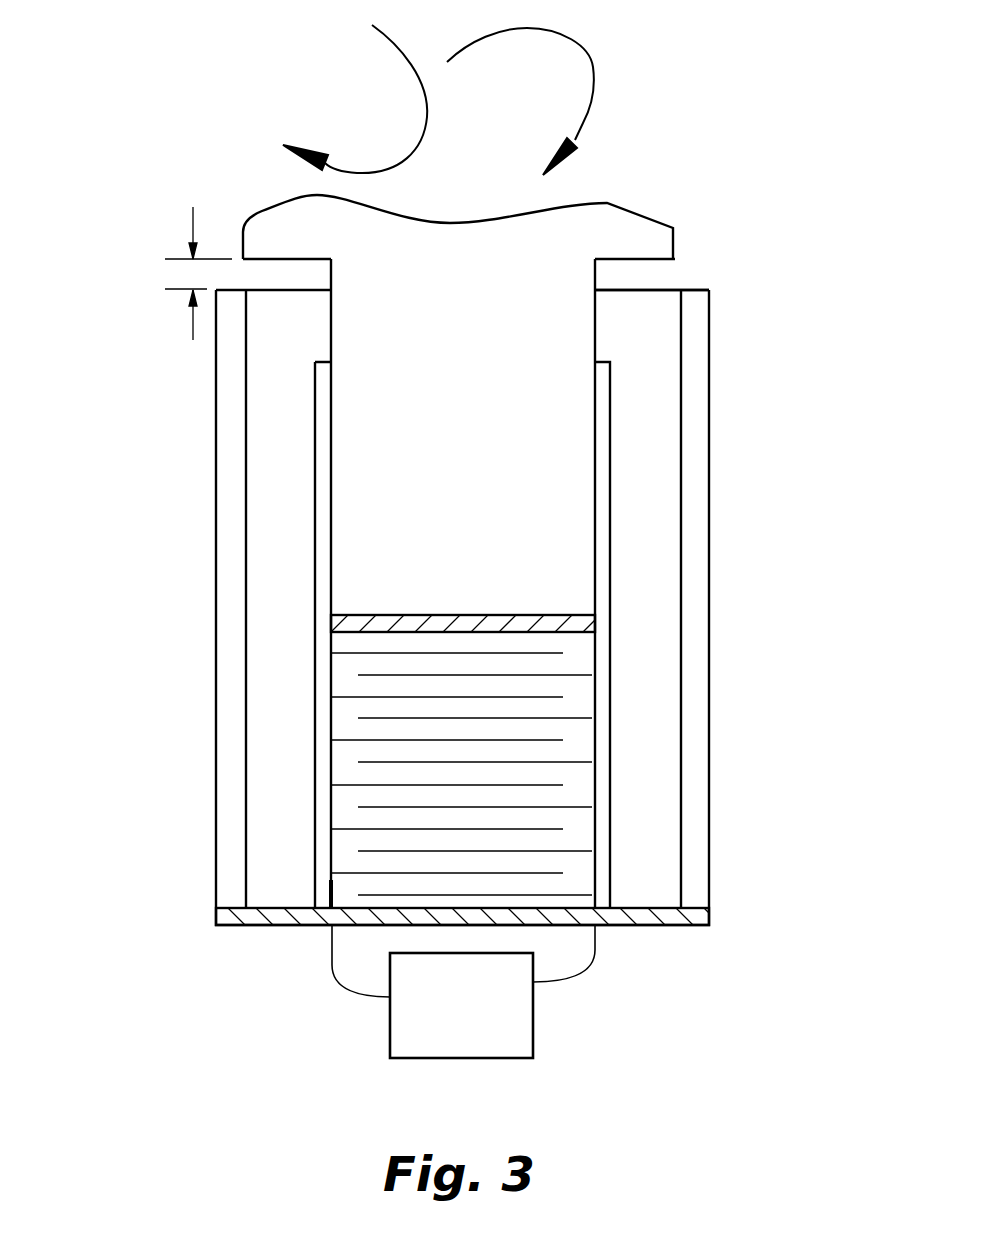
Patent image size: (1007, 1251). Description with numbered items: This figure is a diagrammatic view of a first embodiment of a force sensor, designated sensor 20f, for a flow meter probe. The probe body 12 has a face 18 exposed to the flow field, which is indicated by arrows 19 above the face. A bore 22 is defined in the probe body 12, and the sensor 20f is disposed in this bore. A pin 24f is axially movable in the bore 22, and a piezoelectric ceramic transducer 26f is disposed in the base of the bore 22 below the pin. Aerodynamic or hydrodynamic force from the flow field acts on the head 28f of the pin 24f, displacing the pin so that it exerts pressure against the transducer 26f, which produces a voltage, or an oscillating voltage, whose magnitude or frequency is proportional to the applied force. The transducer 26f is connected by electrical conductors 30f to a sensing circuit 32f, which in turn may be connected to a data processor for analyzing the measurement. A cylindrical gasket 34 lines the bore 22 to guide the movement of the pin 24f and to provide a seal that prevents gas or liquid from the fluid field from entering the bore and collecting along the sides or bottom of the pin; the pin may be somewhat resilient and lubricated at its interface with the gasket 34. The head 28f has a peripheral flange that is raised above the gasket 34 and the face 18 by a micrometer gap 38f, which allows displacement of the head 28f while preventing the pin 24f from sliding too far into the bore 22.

The probe body 12 is at (709, 415).
The face 18 is at (693, 290).
The arrows 19 is at (587, 50).
The sensor 20f is at (147, 472).
The bore 22 is at (681, 602).
The pin 24f is at (560, 541).
The piezoelectric ceramic transducer 26f is at (542, 747).
The head 28f is at (628, 205).
The electrical conductors 30f is at (593, 957).
The sensing circuit 32f is at (533, 1023).
The cylindrical gasket 34 is at (262, 703).
The micrometer gap 38f is at (173, 275).